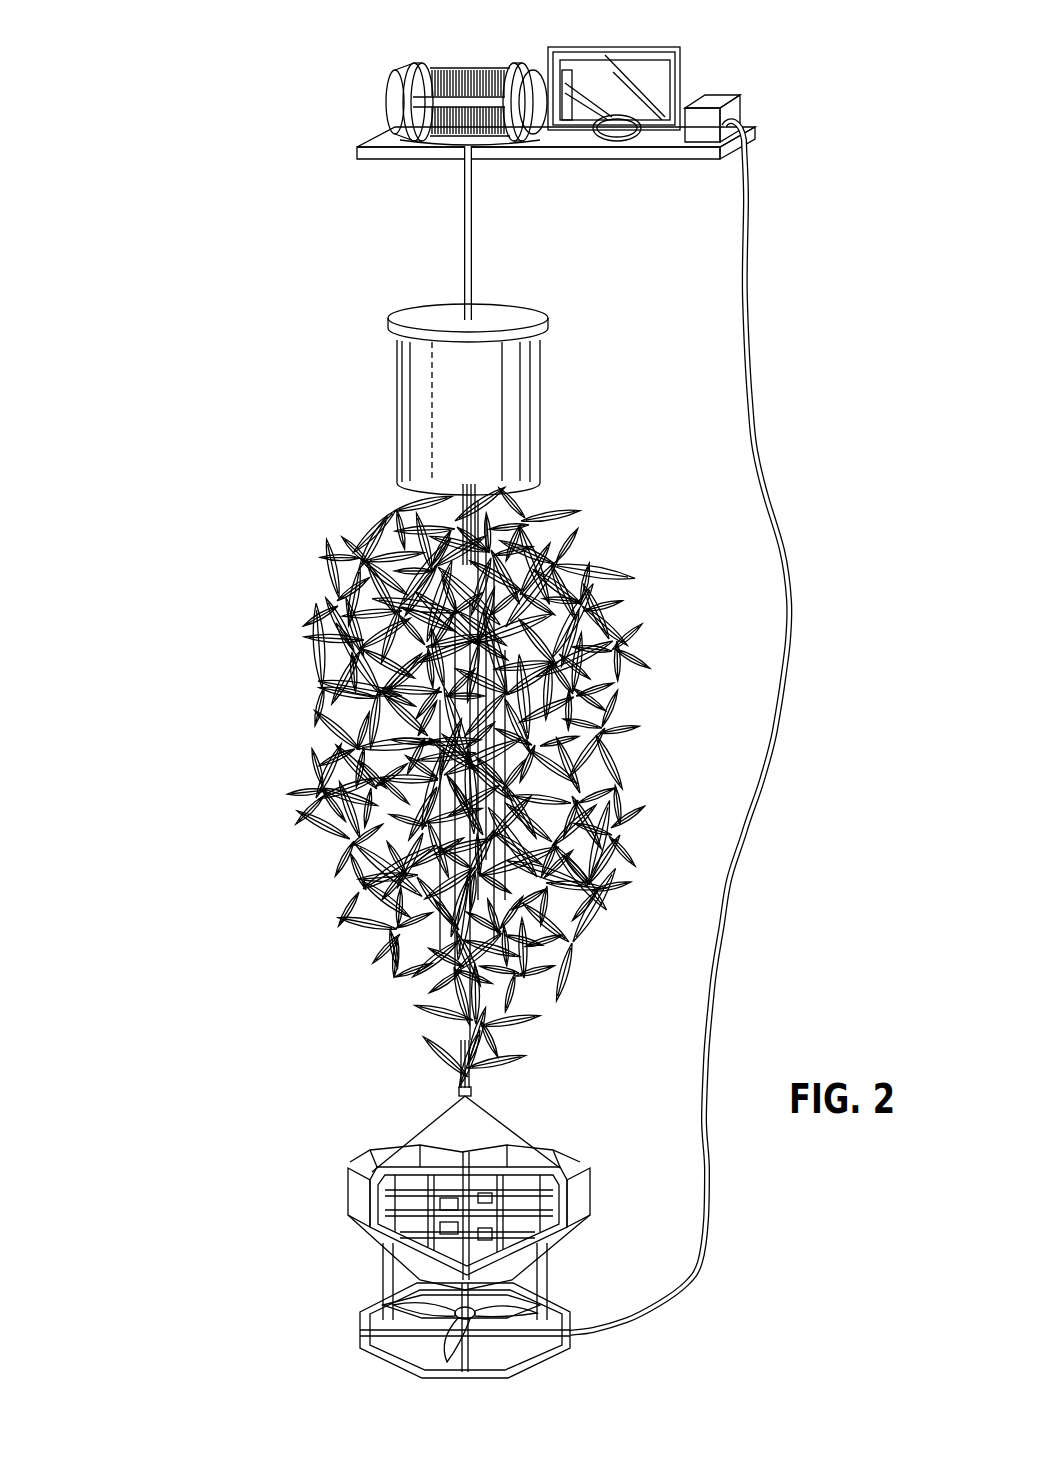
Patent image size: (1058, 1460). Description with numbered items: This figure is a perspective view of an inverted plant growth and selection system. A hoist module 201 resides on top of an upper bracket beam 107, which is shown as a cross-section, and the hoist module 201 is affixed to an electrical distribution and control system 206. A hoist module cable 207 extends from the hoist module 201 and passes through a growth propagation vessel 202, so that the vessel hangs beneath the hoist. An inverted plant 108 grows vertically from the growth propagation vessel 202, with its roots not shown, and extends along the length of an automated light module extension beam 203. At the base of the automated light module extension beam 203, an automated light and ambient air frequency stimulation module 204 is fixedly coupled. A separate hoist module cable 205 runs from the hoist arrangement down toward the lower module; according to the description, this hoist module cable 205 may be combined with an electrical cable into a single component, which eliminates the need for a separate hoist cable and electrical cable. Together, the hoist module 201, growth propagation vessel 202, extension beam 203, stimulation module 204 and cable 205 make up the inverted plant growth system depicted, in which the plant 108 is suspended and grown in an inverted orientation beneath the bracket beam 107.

The upper bracket beam 107 is at (565, 150).
The inverted plant 108 is at (392, 717).
The hoist module 201 is at (398, 93).
The growth propagation vessel 202 is at (420, 410).
The automated light module extension beam 203 is at (470, 503).
The automated light and ambient air frequency stimulation module 204 is at (363, 1265).
The hoist module cable 205 is at (750, 400).
The electrical distribution and control system 206 is at (652, 73).
The hoist module cable 207 is at (462, 235).